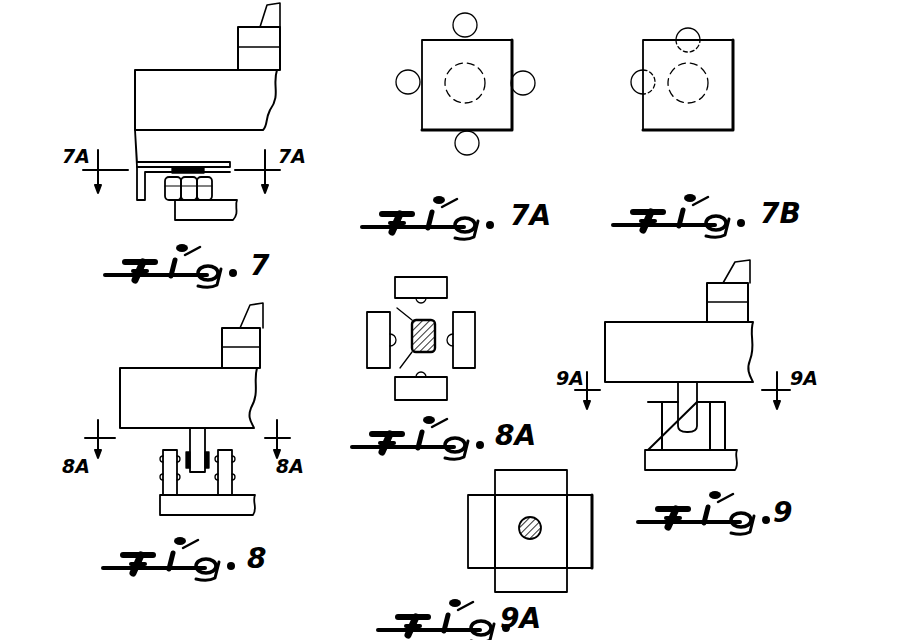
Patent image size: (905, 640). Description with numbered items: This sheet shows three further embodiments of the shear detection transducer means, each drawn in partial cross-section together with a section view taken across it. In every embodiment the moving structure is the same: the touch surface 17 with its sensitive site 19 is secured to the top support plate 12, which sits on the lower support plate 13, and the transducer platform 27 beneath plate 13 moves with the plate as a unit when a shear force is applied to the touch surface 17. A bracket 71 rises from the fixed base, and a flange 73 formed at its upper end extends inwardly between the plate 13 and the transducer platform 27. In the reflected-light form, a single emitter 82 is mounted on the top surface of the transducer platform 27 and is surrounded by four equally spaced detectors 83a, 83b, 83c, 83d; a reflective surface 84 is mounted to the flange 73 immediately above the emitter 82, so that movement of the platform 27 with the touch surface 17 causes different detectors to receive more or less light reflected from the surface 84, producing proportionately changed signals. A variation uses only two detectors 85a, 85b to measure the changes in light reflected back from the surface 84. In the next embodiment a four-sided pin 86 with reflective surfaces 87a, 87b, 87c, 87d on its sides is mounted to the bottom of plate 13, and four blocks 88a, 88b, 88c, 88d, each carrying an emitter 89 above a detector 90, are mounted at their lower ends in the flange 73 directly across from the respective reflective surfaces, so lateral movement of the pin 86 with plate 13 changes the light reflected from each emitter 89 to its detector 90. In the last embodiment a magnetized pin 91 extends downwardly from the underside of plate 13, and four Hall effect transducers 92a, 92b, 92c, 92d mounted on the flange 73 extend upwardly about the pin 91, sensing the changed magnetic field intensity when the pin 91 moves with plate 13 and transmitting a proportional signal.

In FIG. 7, the support plate 12 is at (238, 56).
In FIG. 8, the support plate 12 is at (230, 355).
In FIG. 9, the support plate 12 is at (742, 315).
In FIG. 7, the support plate 13 is at (135, 78).
In FIG. 8, the support plate 13 is at (122, 370).
In FIG. 9, the support plate 13 is at (752, 340).
In FIG. 7, the touch surface 17 is at (216, 19).
In FIG. 8, the touch surface 17 is at (208, 316).
In FIG. 9, the touch surface 17 is at (680, 277).
In FIG. 7, the sensitive site 19 is at (283, 13).
In FIG. 8, the sensitive site 19 is at (268, 310).
In FIG. 9, the sensitive site 19 is at (758, 268).
In FIG. 7, the transducer platform 27 is at (187, 212).
In FIG. 9, the transducer platform 27 is at (737, 458).
In FIG. 7, the bracket 71 is at (137, 200).
In FIG. 7, the flange 73 is at (137, 132).
In FIG. 8, the flange 73 is at (255, 512).
In FIG. 9A, the flange 73 is at (514, 503).
In FIG. 7A, the emitter 82 is at (483, 72).
In FIG. 7B, the emitter 82 is at (708, 75).
In FIG. 7A, the detector 83a is at (395, 80).
In FIG. 7A, the detector 83b is at (473, 150).
In FIG. 7A, the detector 83c is at (527, 90).
In FIG. 7A, the detector 83d is at (453, 22).
In FIG. 7, the reflective surface 84 is at (190, 167).
In FIG. 7A, the reflective surface 84 is at (512, 42).
In FIG. 7B, the reflective surface 84 is at (733, 120).
In FIG. 7B, the detector 85a is at (637, 95).
In FIG. 7B, the detector 85b is at (693, 28).
In FIG. 8, the four-sided pin 86 is at (197, 430).
In FIG. 8A, the reflective surface 87a is at (412, 345).
In FIG. 8A, the reflective surface 87b is at (433, 352).
In FIG. 8A, the reflective surface 87c is at (437, 327).
In FIG. 8A, the reflective surface 87d is at (435, 322).
In FIG. 8, the block 88a is at (168, 490).
In FIG. 8A, the block 88a is at (370, 340).
In FIG. 8A, the block 88b is at (408, 392).
In FIG. 8, the block 88c is at (227, 490).
In FIG. 8A, the block 88c is at (467, 345).
In FIG. 8A, the block 88d is at (438, 283).
In FIG. 8, the emitter 89 is at (163, 462).
In FIG. 8, the detector 90 is at (167, 480).
In FIG. 9, the magnetized pin 91 is at (683, 405).
In FIG. 9A, the magnetized pin 91 is at (540, 532).
In FIG. 9, the Hall effect transducer 92a is at (648, 433).
In FIG. 9A, the Hall effect transducer 92a is at (476, 530).
In FIG. 9A, the Hall effect transducer 92b is at (567, 585).
In FIG. 9, the Hall effect transducer 92c is at (725, 432).
In FIG. 9A, the Hall effect transducer 92c is at (590, 548).
In FIG. 9A, the Hall effect transducer 92d is at (558, 478).